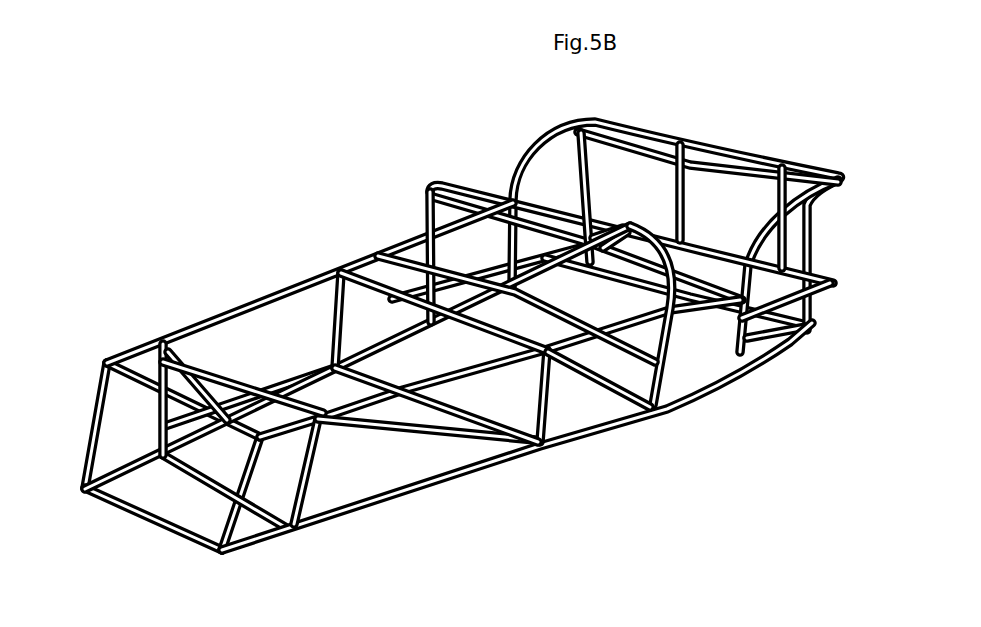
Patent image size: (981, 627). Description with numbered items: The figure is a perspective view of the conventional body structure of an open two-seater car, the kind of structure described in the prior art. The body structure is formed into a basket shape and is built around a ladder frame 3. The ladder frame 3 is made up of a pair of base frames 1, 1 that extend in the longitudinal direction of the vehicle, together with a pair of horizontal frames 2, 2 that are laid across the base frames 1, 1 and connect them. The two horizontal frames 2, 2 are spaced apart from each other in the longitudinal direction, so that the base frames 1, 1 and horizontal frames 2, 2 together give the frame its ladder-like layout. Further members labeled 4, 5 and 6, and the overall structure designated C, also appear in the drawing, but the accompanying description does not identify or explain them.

The base frame 1 is at (307, 374).
The horizontal frame 2 is at (440, 417).
The ladder frame 3 is at (464, 431).
The upper longitudinal member 4 is at (270, 297).
The vertical post 5 is at (160, 421).
The diagonal brace 6 is at (224, 373).
The chassis C is at (462, 336).